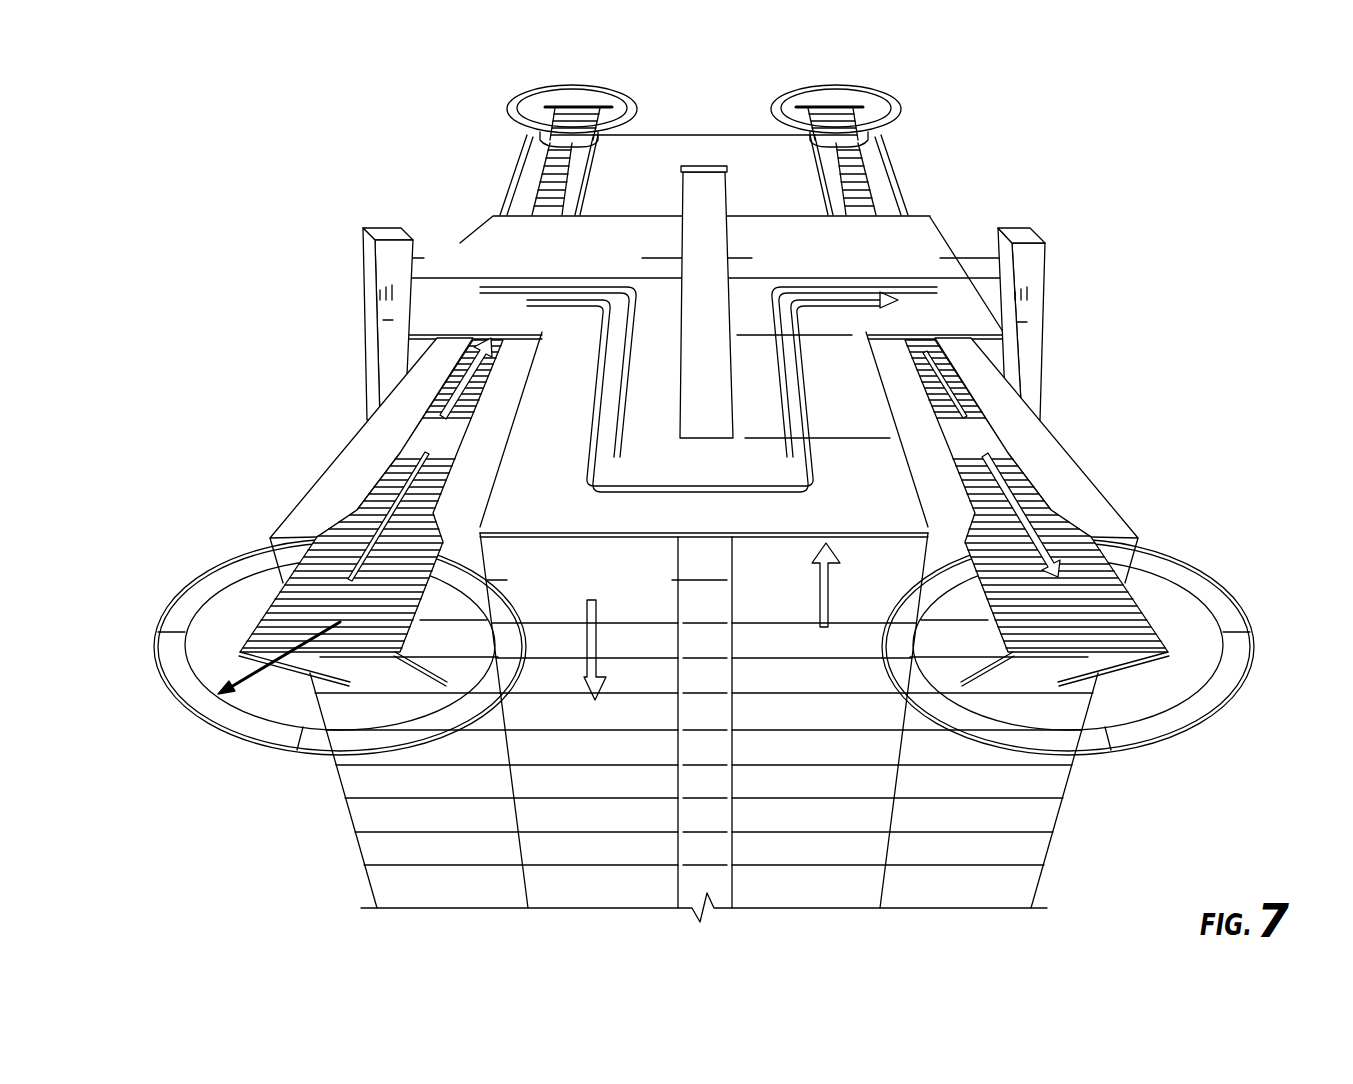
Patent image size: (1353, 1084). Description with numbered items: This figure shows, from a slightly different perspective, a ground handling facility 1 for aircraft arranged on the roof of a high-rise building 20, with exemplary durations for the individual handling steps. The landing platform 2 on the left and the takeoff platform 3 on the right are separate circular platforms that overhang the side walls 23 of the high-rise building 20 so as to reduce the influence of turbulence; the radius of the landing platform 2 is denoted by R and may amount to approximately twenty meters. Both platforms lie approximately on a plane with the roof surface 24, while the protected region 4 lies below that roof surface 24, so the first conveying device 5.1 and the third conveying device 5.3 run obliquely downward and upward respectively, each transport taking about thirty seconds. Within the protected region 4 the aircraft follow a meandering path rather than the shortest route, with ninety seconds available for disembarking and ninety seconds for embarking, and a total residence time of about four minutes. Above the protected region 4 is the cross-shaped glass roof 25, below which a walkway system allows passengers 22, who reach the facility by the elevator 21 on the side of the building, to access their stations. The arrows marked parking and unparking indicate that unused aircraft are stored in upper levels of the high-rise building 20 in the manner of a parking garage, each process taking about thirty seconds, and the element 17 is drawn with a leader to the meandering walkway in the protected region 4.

The ground handling facility 1 is at (958, 110).
The landing platform 2 is at (558, 90).
The takeoff platform 3 is at (860, 87).
The protected region 4 is at (447, 362).
The first conveying device 5.1 is at (545, 187).
The third conveying device 5.3 is at (857, 178).
The U-shaped walkway 17 is at (805, 417).
The high-rise building 20 is at (1073, 872).
The elevator 21 is at (1020, 335).
The passengers 22 is at (1030, 290).
The side walls 23 is at (948, 890).
The roof surface 24 is at (757, 177).
The cross-shaped glass roof 25 is at (705, 193).
The radius of the landing platform R is at (240, 660).